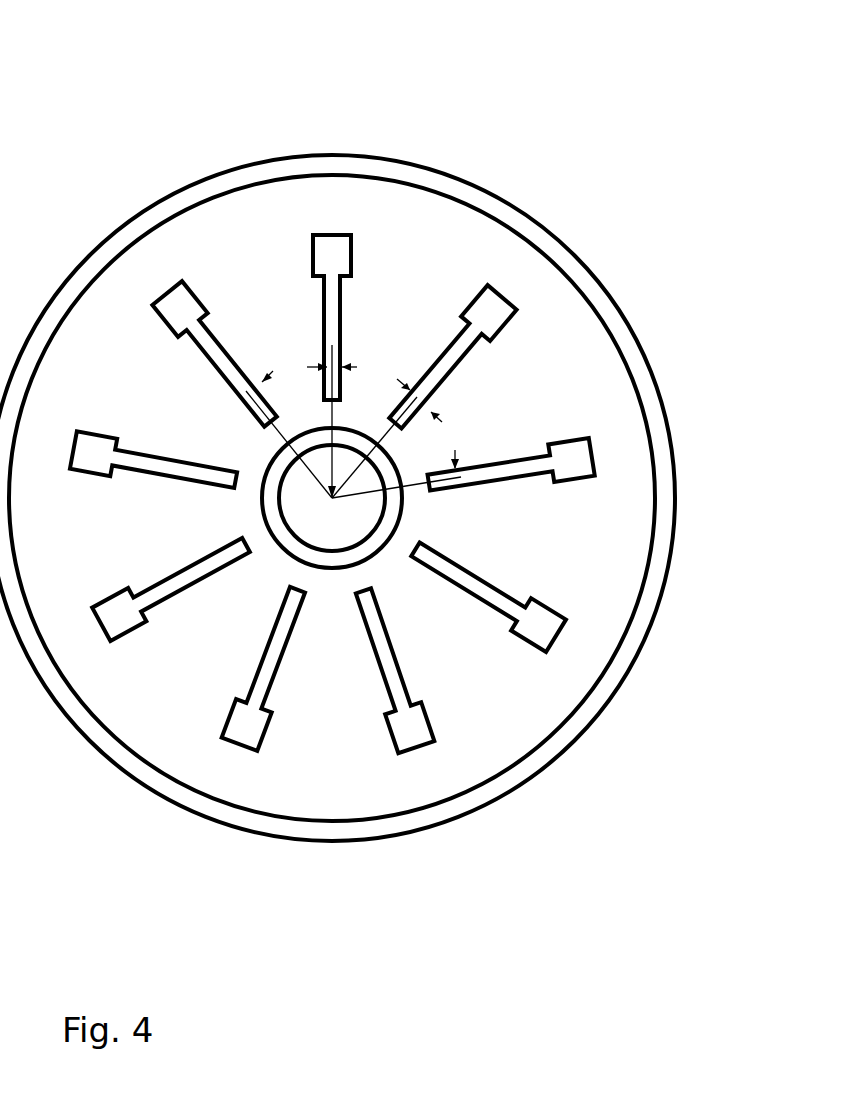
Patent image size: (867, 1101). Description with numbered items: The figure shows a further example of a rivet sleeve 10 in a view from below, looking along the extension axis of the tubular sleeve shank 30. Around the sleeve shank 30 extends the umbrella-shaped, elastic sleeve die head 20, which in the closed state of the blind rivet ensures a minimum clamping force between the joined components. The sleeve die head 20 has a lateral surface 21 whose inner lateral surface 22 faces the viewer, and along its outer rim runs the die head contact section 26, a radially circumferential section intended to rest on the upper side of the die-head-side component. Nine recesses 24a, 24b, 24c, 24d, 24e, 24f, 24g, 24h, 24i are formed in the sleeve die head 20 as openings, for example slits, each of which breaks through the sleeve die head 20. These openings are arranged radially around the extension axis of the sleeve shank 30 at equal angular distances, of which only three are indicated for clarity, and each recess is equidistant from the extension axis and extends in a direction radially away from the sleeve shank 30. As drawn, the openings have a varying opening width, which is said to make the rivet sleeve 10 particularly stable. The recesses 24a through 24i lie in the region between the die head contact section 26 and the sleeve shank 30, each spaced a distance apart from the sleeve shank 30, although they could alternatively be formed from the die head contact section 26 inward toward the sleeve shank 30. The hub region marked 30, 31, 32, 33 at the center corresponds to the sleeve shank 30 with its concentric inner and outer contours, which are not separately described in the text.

The rivet sleeve 10 is at (156, 85).
The sleeve die head 20 is at (667, 135).
The lateral surface 21 is at (332, 456).
The inner lateral surface 22 is at (453, 250).
The die head contact section 26 is at (607, 311).
The recess 24a is at (337, 257).
The recess 24b is at (485, 317).
The recess 24c is at (522, 468).
The recess 24d is at (533, 618).
The recess 24e is at (390, 667).
The recess 24f is at (247, 722).
The recess 24g is at (173, 587).
The recess 24h is at (103, 451).
The recess 24i is at (187, 311).
The sleeve shank 30 is at (408, 567).
The bore 31 is at (408, 567).
The inner circle of shaft bore 32 is at (362, 533).
The outer circle of shaft bore 33 is at (357, 557).